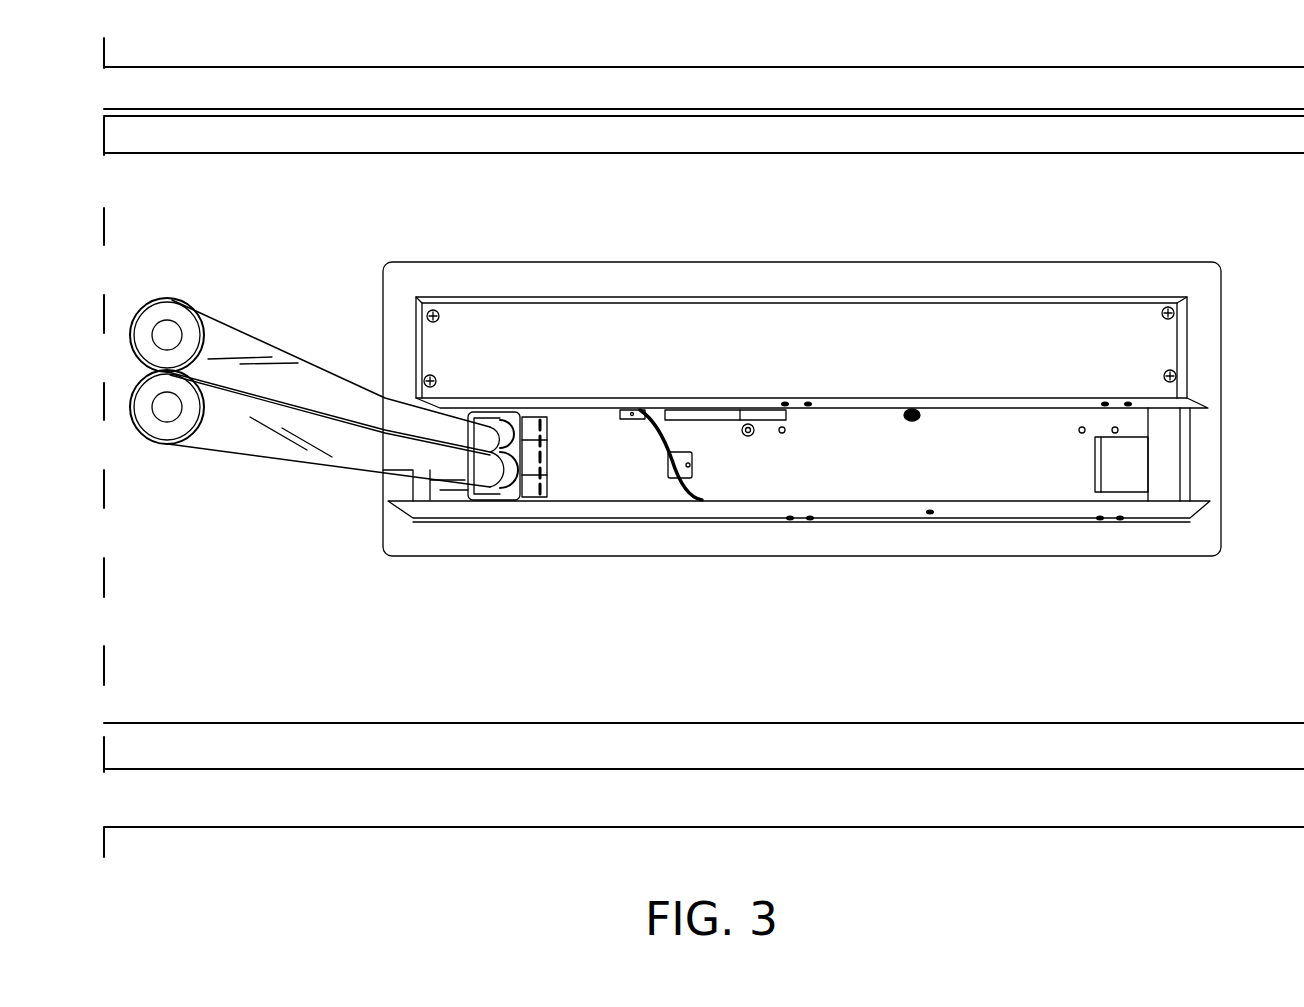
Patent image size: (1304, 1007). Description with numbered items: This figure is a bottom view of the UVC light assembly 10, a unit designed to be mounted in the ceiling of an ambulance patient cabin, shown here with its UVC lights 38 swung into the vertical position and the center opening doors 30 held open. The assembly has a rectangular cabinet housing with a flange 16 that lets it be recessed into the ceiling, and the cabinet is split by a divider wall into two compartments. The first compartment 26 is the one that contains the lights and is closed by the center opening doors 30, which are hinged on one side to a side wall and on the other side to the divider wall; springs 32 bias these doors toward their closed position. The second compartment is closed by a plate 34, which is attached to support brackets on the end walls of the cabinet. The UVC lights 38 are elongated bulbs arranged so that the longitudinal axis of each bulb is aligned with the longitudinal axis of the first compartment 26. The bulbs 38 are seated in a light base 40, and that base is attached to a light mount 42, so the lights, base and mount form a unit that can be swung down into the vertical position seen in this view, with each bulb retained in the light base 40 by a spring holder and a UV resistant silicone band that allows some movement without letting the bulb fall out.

The UVC light assembly 10 is at (930, 236).
The flange 16 is at (1110, 262).
The first compartment 26 is at (1160, 465).
The center opening doors 30 is at (845, 510).
The springs 32 is at (912, 408).
The plate 34 is at (597, 362).
The UVC lights 38 is at (245, 325).
The light base 40 is at (508, 490).
The light mount 42 is at (537, 437).